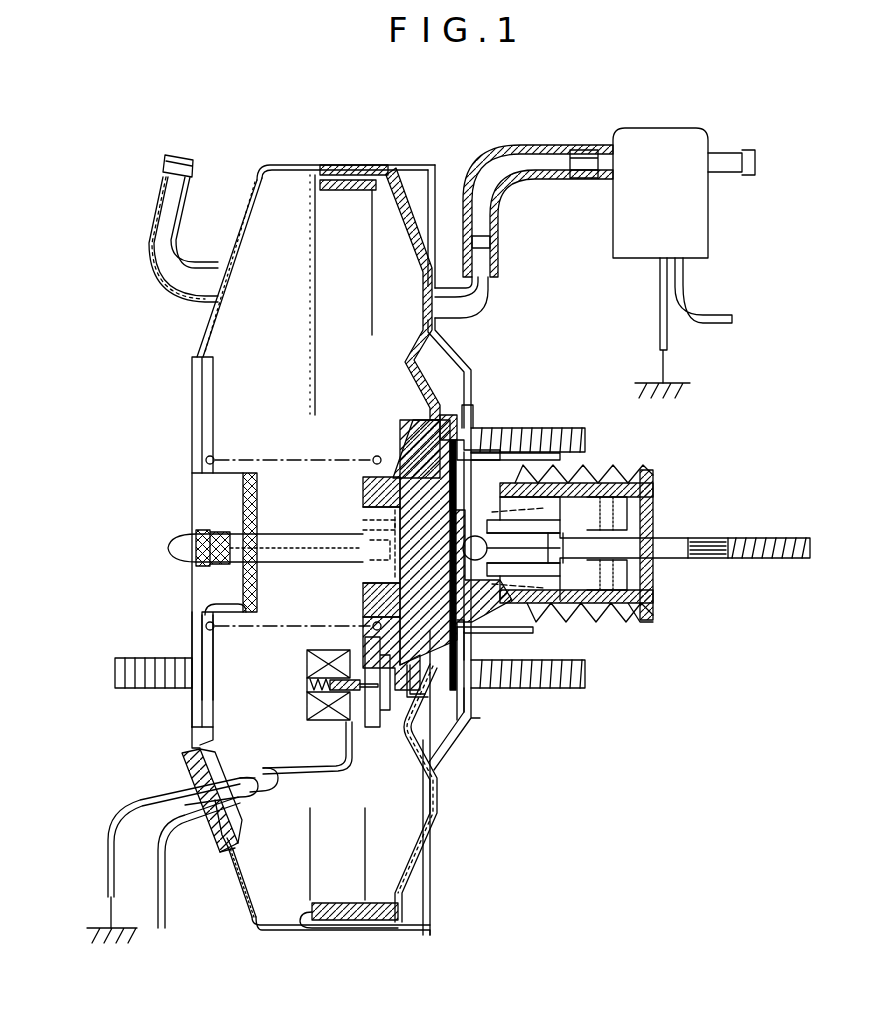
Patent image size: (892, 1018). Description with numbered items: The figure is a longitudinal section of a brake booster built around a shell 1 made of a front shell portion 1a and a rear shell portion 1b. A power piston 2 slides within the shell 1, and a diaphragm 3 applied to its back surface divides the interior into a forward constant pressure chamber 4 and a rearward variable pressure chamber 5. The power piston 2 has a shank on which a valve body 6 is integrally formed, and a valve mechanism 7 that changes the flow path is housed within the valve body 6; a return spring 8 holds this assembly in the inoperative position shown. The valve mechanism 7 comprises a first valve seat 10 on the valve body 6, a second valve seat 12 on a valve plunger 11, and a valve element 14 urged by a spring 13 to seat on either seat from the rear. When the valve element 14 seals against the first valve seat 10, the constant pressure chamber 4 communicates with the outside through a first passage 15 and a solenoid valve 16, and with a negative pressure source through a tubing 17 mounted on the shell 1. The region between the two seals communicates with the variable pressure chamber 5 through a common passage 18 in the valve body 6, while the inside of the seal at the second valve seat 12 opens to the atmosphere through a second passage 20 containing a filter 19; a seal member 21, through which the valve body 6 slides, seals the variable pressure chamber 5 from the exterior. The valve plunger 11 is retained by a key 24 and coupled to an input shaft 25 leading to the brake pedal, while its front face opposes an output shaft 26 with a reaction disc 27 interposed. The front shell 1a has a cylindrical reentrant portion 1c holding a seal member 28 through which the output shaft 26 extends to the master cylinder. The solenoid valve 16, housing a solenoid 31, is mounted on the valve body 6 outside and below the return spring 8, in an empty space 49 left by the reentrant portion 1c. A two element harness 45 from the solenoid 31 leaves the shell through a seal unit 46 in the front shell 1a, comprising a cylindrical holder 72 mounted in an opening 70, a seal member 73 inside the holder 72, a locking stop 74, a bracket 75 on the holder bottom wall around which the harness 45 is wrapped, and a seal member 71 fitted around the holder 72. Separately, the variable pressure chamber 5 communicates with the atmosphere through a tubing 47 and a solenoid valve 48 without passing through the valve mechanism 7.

The shell 1 is at (293, 935).
The front shell portion 1a is at (242, 897).
The rear shell portion 1b is at (425, 868).
The reentrant portion 1c is at (225, 614).
The power piston 2 is at (422, 803).
The diaphragm 3 is at (352, 900).
The constant pressure chamber 4 is at (278, 747).
The variable pressure chamber 5 is at (455, 725).
The valve body 6 is at (363, 602).
The valve mechanism 7 is at (525, 605).
The return spring 8 is at (255, 440).
The first valve seat 10 is at (482, 455).
The valve plunger 11 is at (363, 487).
The second valve seat 12 is at (440, 495).
The spring 13 is at (595, 470).
The valve element 14 is at (497, 520).
The first passage 15 is at (425, 635).
The solenoid valve 16 is at (332, 727).
The tubing 17 is at (150, 275).
The common passage 18 is at (462, 450).
The filter 19 is at (643, 620).
The second passage 20 is at (600, 622).
The seal member 21 is at (520, 455).
The key 24 is at (400, 430).
The input shaft 25 is at (760, 562).
The output shaft 26 is at (170, 552).
The reaction disc 27 is at (363, 525).
The seal member 28 is at (243, 520).
The solenoid 31 is at (306, 705).
The two element harness 45 is at (272, 790).
The seal unit 46 is at (250, 836).
The tubing 47 is at (505, 300).
The solenoid valve 48 is at (660, 130).
The empty space 49 is at (200, 640).
The opening 70 is at (212, 752).
The seal member 71 is at (196, 745).
The cylindrical holder 72 is at (222, 852).
The seal member 73 is at (195, 798).
The locking stop 74 is at (195, 838).
The bracket 75 is at (262, 778).